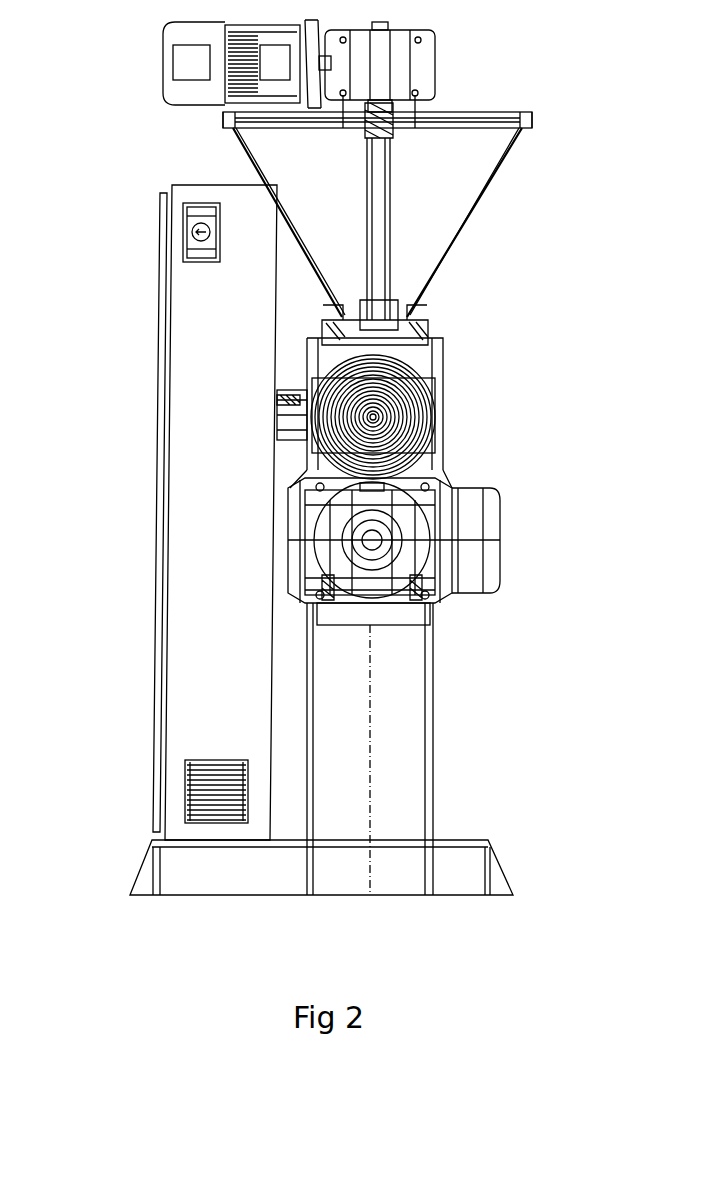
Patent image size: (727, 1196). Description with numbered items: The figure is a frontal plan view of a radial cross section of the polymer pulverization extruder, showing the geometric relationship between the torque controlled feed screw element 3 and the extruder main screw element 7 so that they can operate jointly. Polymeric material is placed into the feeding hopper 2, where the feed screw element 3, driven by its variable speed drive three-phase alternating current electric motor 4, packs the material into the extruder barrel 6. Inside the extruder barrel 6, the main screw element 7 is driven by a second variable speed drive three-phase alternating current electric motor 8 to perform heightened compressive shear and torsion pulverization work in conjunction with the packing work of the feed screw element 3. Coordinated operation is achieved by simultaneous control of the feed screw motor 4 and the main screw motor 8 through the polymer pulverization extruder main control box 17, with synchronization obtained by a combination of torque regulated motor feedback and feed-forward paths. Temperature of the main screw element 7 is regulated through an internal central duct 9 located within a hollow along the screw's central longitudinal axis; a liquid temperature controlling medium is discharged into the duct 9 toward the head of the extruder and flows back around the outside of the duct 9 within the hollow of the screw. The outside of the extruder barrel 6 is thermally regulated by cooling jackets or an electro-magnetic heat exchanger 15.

The feeding hopper 2 is at (473, 170).
The torque controlled feed screw element 3 is at (405, 300).
The variable speed drive three-phase alternating current electric motor 4 is at (165, 63).
The extruder barrel 6 is at (413, 383).
The extruder main screw element 7 is at (283, 417).
The variable speed drive three-phase alternating current electric motor 8 is at (500, 530).
The internal central duct 9 is at (417, 433).
The cooling jackets or electro-magnetic heat exchanger 15 is at (313, 368).
The polymer pulverization extruder main control box 17 is at (200, 543).